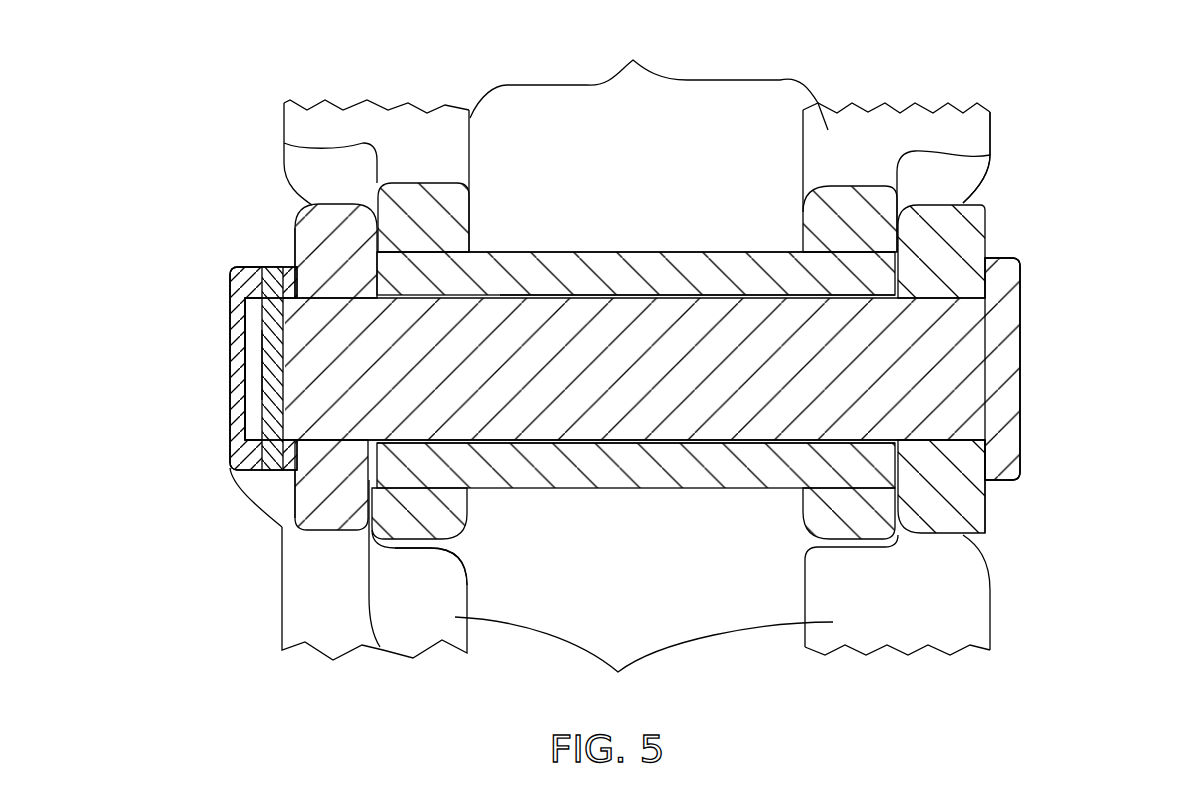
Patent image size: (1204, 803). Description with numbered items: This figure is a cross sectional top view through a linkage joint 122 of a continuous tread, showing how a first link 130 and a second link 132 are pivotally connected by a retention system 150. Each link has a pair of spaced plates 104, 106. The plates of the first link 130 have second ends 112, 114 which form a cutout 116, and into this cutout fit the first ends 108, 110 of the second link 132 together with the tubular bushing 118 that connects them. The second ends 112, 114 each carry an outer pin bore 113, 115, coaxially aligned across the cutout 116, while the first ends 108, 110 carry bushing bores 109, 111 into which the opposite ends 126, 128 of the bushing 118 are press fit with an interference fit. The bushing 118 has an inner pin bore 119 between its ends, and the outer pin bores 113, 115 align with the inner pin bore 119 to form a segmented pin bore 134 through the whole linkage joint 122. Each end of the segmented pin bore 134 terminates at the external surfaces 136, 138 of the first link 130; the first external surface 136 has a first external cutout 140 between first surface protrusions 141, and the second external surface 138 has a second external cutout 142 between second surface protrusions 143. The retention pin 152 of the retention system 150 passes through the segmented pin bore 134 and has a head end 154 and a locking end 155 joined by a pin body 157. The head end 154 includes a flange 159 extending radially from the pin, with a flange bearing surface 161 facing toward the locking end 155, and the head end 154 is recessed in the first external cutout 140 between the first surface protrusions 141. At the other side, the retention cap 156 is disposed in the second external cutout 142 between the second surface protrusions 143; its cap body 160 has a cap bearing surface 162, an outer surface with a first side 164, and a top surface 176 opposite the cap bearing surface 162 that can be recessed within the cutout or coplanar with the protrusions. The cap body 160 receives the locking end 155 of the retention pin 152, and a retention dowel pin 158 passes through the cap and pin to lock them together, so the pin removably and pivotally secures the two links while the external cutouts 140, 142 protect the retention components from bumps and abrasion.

The plate 104 is at (955, 130).
The plate 106 is at (306, 122).
The first end 108 is at (850, 213).
The bushing bore 109 is at (822, 263).
The first end 110 is at (452, 205).
The bushing bore 111 is at (442, 258).
The second end 112 is at (947, 227).
The outer pin bore 113 is at (1000, 353).
The second end 114 is at (318, 218).
The outer pin bore 115 is at (257, 407).
The cutout 116 is at (448, 547).
The bushing 118 is at (600, 262).
The inner pin bore 119 is at (662, 300).
The linkage joint 122 is at (1070, 210).
The end of bushing 126 is at (842, 439).
The end of bushing 128 is at (300, 532).
The first link 130 is at (644, 661).
The second link 132 is at (649, 80).
The segmented pin bore 134 is at (877, 412).
The first external surface 136 is at (990, 482).
The second external surface 138 is at (289, 243).
The first external cutout 140 is at (997, 247).
The first surface protrusions 141 is at (997, 493).
The second external cutout 142 is at (282, 527).
The second surface protrusions 143 is at (272, 494).
The retention system 150 is at (131, 353).
The retention pin 152 is at (673, 425).
The head end 154 is at (917, 398).
The locking end 155 is at (257, 393).
The retention cap 156 is at (229, 290).
The pin body 157 is at (568, 470).
The retention dowel pin 158 is at (273, 363).
The flange 159 is at (1010, 270).
The cap body 160 is at (243, 309).
The flange bearing surface 161 is at (983, 458).
The cap bearing surface 162 is at (300, 283).
The first side 164 is at (247, 266).
The top surface 176 is at (229, 360).